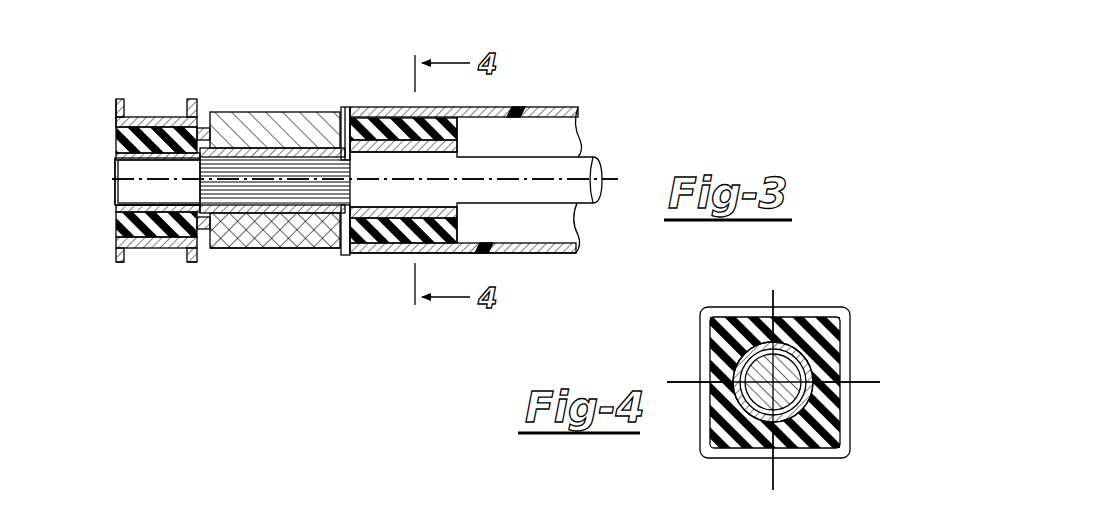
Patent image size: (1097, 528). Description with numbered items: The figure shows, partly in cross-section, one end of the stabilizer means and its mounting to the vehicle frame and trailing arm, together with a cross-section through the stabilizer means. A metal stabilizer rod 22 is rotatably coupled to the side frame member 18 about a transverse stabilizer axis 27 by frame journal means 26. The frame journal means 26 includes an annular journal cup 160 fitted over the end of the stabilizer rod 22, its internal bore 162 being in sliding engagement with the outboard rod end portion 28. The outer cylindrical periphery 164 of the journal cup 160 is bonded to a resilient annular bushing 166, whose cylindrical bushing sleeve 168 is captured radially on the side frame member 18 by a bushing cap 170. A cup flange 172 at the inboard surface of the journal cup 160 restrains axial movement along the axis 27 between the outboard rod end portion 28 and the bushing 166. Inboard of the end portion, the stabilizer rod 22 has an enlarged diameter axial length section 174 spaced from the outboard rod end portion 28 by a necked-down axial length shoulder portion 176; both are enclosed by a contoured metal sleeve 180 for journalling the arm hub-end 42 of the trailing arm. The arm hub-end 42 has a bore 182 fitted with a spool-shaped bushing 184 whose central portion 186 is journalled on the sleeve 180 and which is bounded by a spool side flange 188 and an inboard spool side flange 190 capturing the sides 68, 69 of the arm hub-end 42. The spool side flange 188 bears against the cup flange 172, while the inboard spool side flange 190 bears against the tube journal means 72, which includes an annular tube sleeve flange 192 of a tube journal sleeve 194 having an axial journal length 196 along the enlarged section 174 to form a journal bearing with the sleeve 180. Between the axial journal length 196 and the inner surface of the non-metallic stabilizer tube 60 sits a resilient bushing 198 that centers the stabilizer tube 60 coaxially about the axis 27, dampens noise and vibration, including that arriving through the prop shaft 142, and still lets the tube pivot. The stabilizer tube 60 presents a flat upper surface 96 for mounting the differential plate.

In FIG. 3, the side frame member 18 is at (127, 100).
In FIG. 3, the stabilizer rod 22 is at (130, 190).
In FIG. 4, the stabilizer rod 22 is at (830, 400).
In FIG. 3, the frame journal means 26 is at (128, 207).
In FIG. 3, the transverse stabilizer axis 27 is at (606, 178).
In FIG. 4, the transverse stabilizer axis 27 is at (866, 382).
In FIG. 3, the outboard rod end portion 28 is at (152, 195).
In FIG. 3, the arm hub-end 42 is at (272, 112).
In FIG. 3, the stabilizer tube 60 is at (533, 264).
In FIG. 4, the stabilizer tube 60 is at (880, 252).
In FIG. 3, the side of the arm hub end 68 is at (212, 243).
In FIG. 3, the side of the arm hub end 69 is at (346, 252).
In FIG. 3, the tube journal means 72 is at (550, 136).
In FIG. 4, the flat upper surface 96 is at (803, 307).
In FIG. 4, the prop shaft 142 is at (702, 322).
In FIG. 3, the journal cup 160 is at (120, 182).
In FIG. 3, the internal bore 162 is at (117, 160).
In FIG. 3, the outer cylindrical periphery 164 is at (155, 120).
In FIG. 3, the resilient annular bushing 166 is at (178, 240).
In FIG. 3, the cylindrical bushing sleeve 168 is at (118, 115).
In FIG. 3, the bushing cap 170 is at (170, 122).
In FIG. 3, the cup flange 172 is at (200, 243).
In FIG. 3, the enlarged diameter axial length section 174 is at (400, 210).
In FIG. 3, the necked-down axial length shoulder portion 176 is at (375, 160).
In FIG. 3, the contoured metal sleeve 180 is at (298, 218).
In FIG. 4, the contoured metal sleeve 180 is at (790, 372).
In FIG. 3, the bore 182 is at (241, 246).
In FIG. 3, the spool-shaped bushing 184 is at (322, 237).
In FIG. 3, the central portion 186 is at (268, 235).
In FIG. 3, the spool side flange 188 is at (210, 125).
In FIG. 3, the inboard spool side flange 190 is at (345, 110).
In FIG. 3, the annular tube sleeve flange 192 is at (352, 107).
In FIG. 3, the tube journal sleeve 194 is at (465, 128).
In FIG. 3, the axial journal length 196 is at (462, 210).
In FIG. 3, the resilient bushing 198 is at (430, 242).
In FIG. 4, the resilient bushing 198 is at (712, 360).